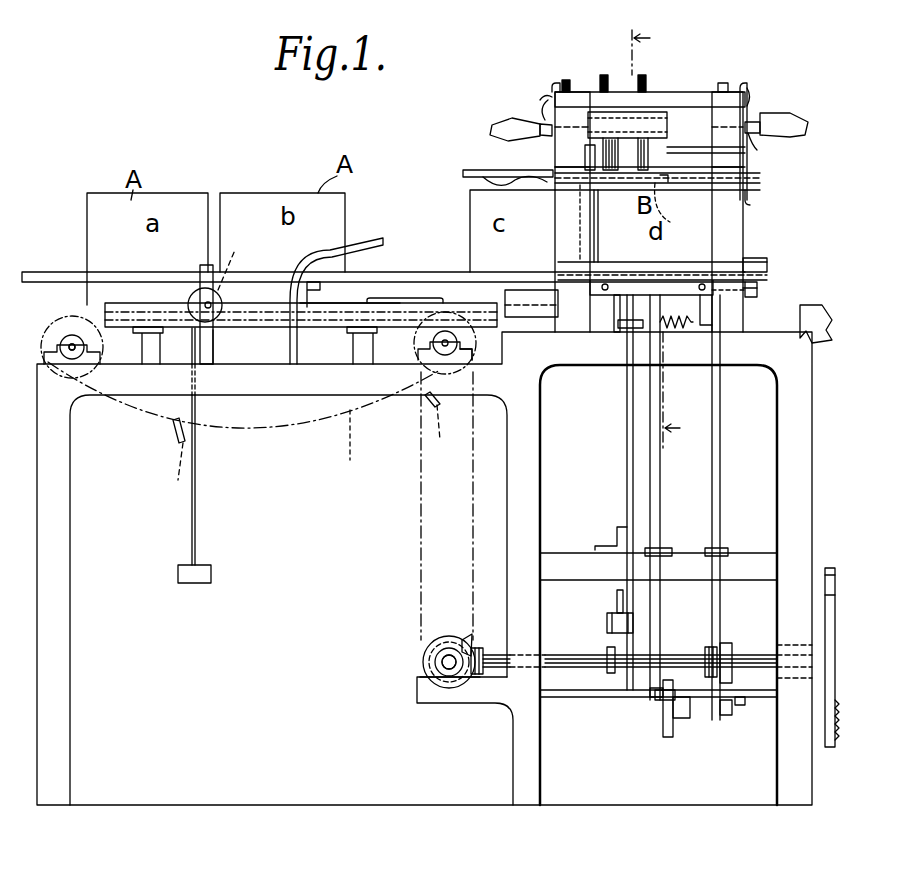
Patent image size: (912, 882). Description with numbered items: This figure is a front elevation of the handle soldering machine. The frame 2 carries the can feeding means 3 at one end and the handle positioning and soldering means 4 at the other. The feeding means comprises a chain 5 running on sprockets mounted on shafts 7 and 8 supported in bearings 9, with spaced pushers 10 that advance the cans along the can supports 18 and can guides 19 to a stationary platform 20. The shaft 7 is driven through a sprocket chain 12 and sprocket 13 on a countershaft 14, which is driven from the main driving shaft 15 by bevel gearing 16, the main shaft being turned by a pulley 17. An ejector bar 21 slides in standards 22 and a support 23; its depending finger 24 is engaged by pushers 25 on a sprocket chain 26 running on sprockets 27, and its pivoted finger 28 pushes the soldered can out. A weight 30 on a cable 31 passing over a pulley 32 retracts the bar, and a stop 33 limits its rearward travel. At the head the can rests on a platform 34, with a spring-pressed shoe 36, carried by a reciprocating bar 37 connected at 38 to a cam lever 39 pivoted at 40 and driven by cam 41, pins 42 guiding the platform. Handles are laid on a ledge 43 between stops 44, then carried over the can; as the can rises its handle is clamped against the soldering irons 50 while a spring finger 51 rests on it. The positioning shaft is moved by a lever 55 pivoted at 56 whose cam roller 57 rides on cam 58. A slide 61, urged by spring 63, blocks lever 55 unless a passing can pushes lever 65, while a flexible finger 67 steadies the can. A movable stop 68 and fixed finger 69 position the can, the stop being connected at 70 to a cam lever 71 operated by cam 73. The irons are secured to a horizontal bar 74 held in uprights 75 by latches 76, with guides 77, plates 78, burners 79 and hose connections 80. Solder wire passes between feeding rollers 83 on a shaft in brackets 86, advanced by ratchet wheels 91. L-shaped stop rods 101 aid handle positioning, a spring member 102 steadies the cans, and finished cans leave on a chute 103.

The frame 2 is at (512, 722).
The can feeding means 3 is at (321, 227).
The handle positioning and soldering means 4 is at (664, 225).
The chain 5 is at (351, 447).
The shaft 7 is at (462, 358).
The shaft 8 is at (70, 352).
The bearings 9 is at (60, 335).
The pushers 10 is at (307, 364).
The sprocket chain 12 is at (419, 508).
The sprocket 13 is at (424, 652).
The countershaft 14 is at (448, 666).
The main driving shaft 15 is at (570, 655).
The bevel gearing 16 is at (465, 638).
The pulley 17 is at (826, 735).
The can supports 18 is at (322, 328).
The can guides 19 is at (356, 300).
The stationary platform 20 is at (520, 290).
The ejector bar 21 is at (442, 272).
The standards 22 is at (556, 213).
The support 23 is at (214, 352).
The depending finger 24 is at (310, 292).
The pushers 25 is at (172, 432).
The sprocket chain 26 is at (270, 428).
The sprockets 27 is at (70, 317).
The pivoted finger 28 is at (583, 262).
The weight 30 is at (192, 583).
The cable 31 is at (197, 498).
The pulley 32 is at (192, 298).
The stop 33 is at (768, 262).
The platform 34 is at (758, 291).
The spring-pressed shoe 36 is at (758, 287).
The reciprocating bar 37 is at (661, 487).
The connection 38 is at (656, 700).
The cam lever 39 is at (666, 738).
The pivot 40 is at (685, 718).
The cam 41 is at (654, 700).
The pins 42 is at (617, 333).
The ledge 43 is at (677, 203).
The stops 44 is at (685, 208).
The soldering irons 50 is at (678, 142).
The spring finger 51 is at (614, 160).
The lever 55 is at (627, 432).
The pivot 56 is at (616, 538).
The cam roller 57 is at (612, 613).
The cam 58 is at (617, 691).
The slide 61 is at (628, 332).
The spring 63 is at (682, 330).
The lever 65 is at (404, 298).
The flexible finger 67 is at (370, 240).
The movable stop 68 is at (722, 383).
The fixed finger 69 is at (585, 155).
The connection 70 is at (745, 703).
The cam lever 71 is at (731, 713).
The cam 73 is at (728, 643).
The horizontal bar 74 is at (722, 88).
The uprights 75 is at (556, 92).
The latches 76 is at (578, 92).
The guides 77 is at (540, 100).
The plates 78 is at (668, 120).
The burners 79 is at (540, 108).
The hose connections 80 is at (500, 130).
The feeding rollers 83 is at (641, 75).
The brackets 86 is at (752, 200).
The ratchet wheels 91 is at (566, 80).
The L-shaped stop rods 101 is at (613, 223).
The spring member 102 is at (463, 178).
The chute 103 is at (812, 332).